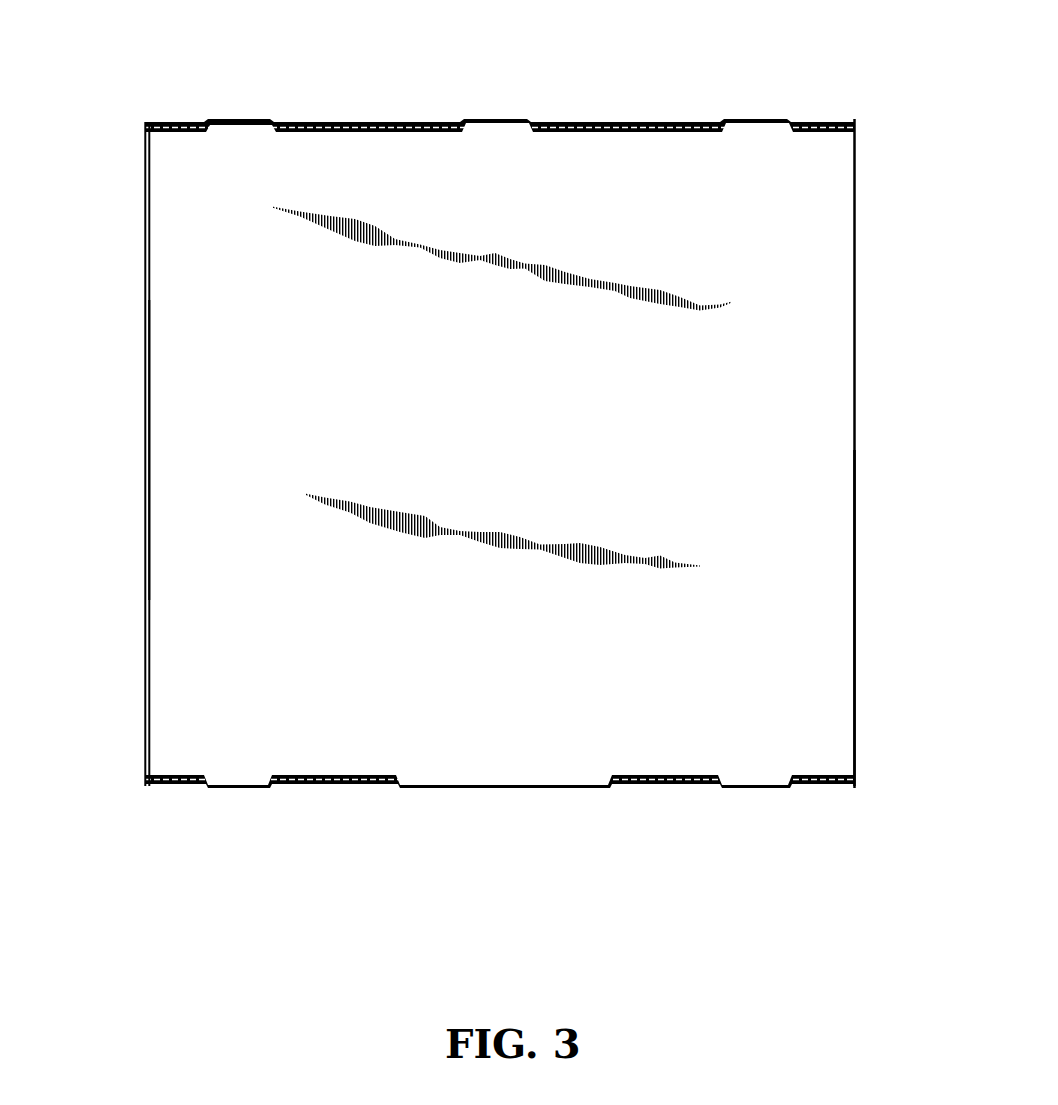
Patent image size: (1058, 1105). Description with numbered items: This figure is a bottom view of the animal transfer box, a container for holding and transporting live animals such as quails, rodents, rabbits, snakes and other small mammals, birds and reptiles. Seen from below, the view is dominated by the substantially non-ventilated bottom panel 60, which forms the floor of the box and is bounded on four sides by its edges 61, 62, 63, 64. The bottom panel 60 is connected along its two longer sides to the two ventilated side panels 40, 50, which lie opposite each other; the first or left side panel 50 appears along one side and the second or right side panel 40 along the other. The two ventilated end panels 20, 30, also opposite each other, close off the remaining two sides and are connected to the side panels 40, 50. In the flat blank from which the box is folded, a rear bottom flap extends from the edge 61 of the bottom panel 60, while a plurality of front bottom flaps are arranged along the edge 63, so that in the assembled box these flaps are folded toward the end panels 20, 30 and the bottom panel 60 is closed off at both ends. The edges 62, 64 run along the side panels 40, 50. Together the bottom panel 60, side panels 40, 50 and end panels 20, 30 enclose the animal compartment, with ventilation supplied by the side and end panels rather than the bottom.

The ventilated end panel 20 is at (504, 808).
The ventilated end panel 30 is at (456, 100).
The ventilated side panel 40 is at (124, 392).
The ventilated side panel 50 is at (874, 437).
The bottom panel 60 is at (522, 444).
The edge of bottom panel 61 is at (345, 133).
The edge of bottom panel 62 is at (854, 533).
The edge of bottom panel 63 is at (338, 775).
The edge of bottom panel 64 is at (150, 447).